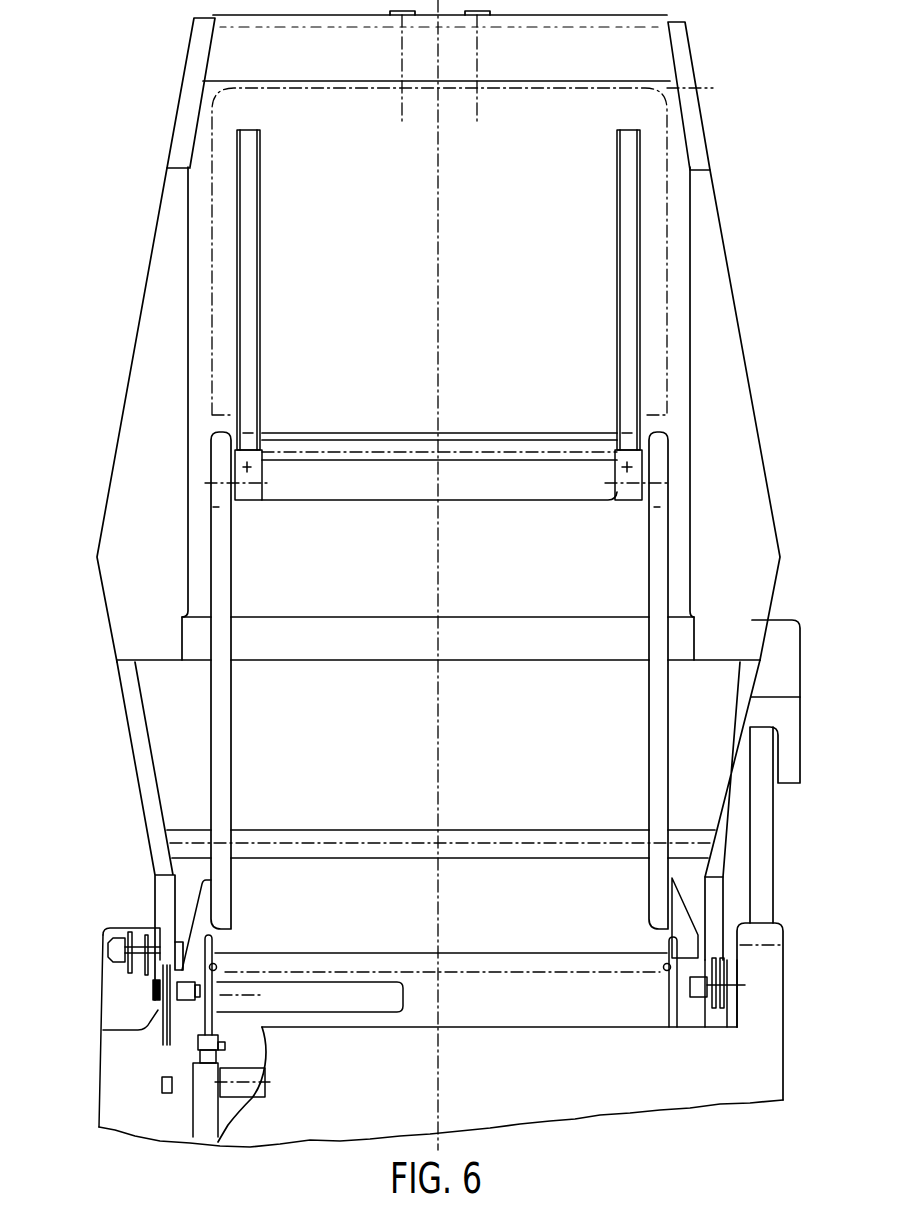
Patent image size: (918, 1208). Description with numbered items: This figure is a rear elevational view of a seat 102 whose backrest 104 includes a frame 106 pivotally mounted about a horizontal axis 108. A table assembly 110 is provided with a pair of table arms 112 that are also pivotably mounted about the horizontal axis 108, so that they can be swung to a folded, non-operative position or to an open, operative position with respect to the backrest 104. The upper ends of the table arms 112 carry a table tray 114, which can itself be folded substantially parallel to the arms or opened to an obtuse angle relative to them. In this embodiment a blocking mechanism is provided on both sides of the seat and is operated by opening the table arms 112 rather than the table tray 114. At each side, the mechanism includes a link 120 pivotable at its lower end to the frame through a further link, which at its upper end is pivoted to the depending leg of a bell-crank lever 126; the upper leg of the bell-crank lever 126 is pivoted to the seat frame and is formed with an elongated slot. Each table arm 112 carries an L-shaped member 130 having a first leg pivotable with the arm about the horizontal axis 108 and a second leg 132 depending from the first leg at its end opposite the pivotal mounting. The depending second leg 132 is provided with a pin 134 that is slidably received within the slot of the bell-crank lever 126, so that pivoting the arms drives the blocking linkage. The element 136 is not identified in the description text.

The seat 102 is at (790, 240).
The backrest 104 is at (142, 468).
The frame 106 is at (722, 810).
The horizontal axis 108 is at (152, 922).
The table assembly 110 is at (208, 566).
The table arms 112 is at (228, 753).
The table tray 114 is at (247, 347).
The link 120 is at (188, 995).
The bell-crank lever 126 is at (207, 1002).
The L-shaped member 130 is at (203, 905).
The second leg 132 is at (192, 960).
The pin 134 is at (217, 967).
The support block 136 is at (670, 995).